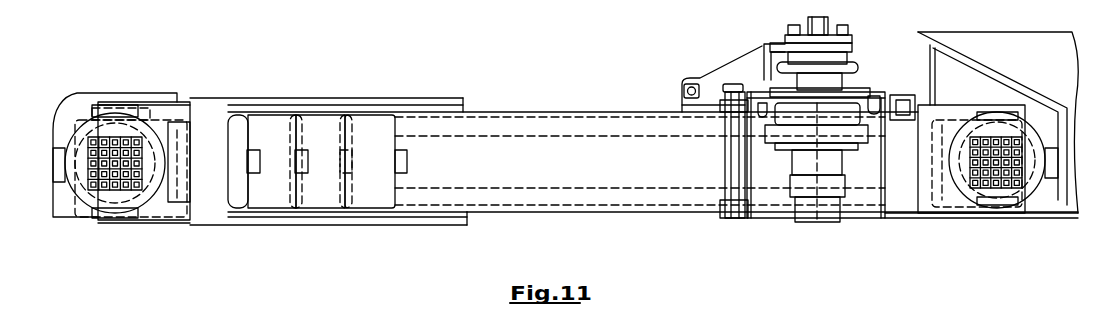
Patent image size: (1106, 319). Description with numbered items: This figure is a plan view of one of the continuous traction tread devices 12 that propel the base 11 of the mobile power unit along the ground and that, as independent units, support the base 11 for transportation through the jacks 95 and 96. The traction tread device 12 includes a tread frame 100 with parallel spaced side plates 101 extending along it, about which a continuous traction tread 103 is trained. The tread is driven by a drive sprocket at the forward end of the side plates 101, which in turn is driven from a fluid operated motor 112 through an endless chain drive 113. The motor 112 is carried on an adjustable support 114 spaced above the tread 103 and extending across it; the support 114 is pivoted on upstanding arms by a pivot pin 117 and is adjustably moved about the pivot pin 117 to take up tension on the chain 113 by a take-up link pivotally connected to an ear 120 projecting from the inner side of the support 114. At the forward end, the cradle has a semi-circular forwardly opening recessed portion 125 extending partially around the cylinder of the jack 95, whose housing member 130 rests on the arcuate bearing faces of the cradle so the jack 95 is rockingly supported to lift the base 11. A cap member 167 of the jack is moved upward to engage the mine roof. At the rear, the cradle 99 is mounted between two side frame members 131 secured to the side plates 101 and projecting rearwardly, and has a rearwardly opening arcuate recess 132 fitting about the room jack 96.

The base 11 is at (1058, 215).
The traction tread device 12 is at (449, 86).
The jack 95 is at (1020, 197).
The jack 96 is at (87, 207).
The cradle 99 is at (187, 203).
The tread frame 100 is at (520, 215).
The side plate 101 is at (645, 112).
The continuous traction tread 103 is at (280, 123).
The motor 112 is at (862, 140).
The endless chain drive 113 is at (866, 65).
The adjustable support 114 is at (873, 98).
The pivot pin 117 is at (735, 84).
The ear 120 is at (910, 105).
The recessed portion 125 is at (1020, 118).
The housing member 130 is at (1018, 117).
The side frame member 131 is at (350, 98).
The arcuate recess 132 is at (130, 110).
The cap member 167 is at (982, 182).